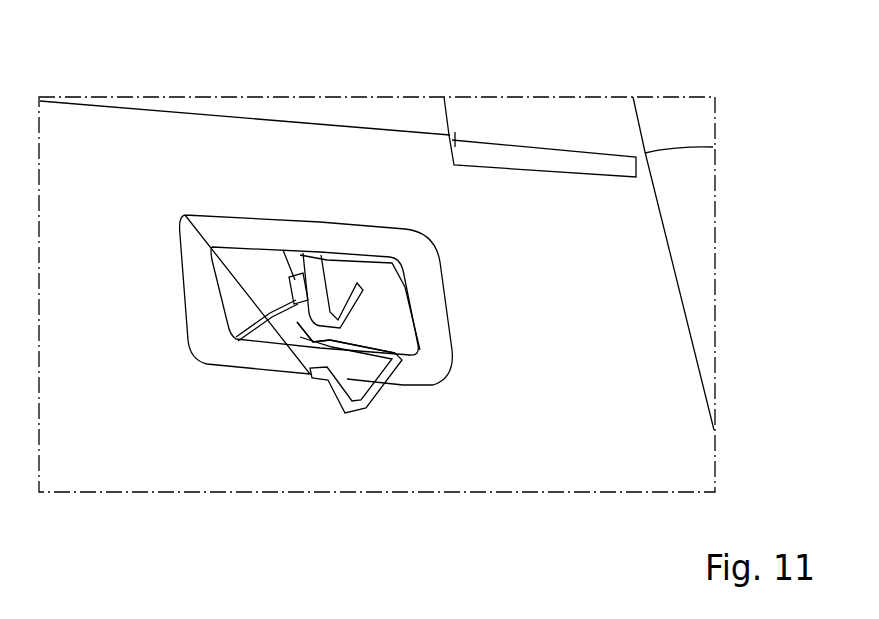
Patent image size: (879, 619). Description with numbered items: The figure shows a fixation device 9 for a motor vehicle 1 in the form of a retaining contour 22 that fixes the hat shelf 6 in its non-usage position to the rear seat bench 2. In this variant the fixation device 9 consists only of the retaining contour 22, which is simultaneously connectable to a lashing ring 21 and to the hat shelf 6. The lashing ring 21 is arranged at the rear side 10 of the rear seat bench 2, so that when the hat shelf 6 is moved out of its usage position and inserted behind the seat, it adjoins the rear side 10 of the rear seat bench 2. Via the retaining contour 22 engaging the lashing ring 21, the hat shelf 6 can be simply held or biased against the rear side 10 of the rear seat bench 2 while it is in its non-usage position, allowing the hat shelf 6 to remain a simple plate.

The motor vehicle 1 is at (710, 88).
The rear seat bench 2 is at (716, 206).
The hat shelf 6 is at (118, 123).
The rear side 10 is at (340, 146).
The lashing ring 21 is at (377, 277).
The fixation device 9 is at (330, 385).
The retaining contour 22 is at (346, 337).